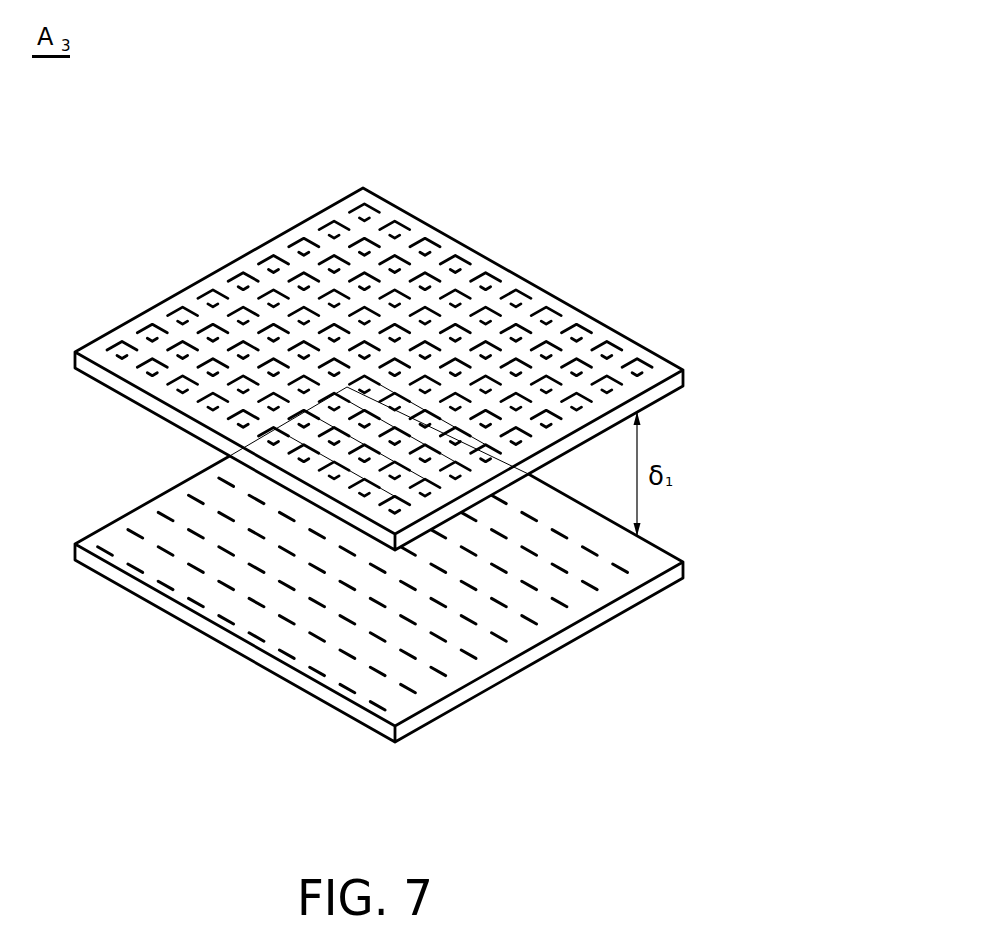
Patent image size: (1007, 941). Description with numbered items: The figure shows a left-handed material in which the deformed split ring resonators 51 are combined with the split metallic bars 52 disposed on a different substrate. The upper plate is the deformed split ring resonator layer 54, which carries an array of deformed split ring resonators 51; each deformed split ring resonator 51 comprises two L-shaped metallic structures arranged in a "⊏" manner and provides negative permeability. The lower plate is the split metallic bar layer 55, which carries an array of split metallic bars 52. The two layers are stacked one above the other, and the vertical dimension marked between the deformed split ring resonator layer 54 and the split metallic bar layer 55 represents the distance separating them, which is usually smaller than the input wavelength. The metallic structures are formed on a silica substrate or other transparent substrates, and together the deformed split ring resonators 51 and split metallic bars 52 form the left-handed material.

The deformed split ring resonator 51 is at (587, 327).
The split metallic bar 52 is at (622, 567).
The deformed split ring resonator layer 54 is at (655, 392).
The split metallic bar layer 55 is at (655, 586).